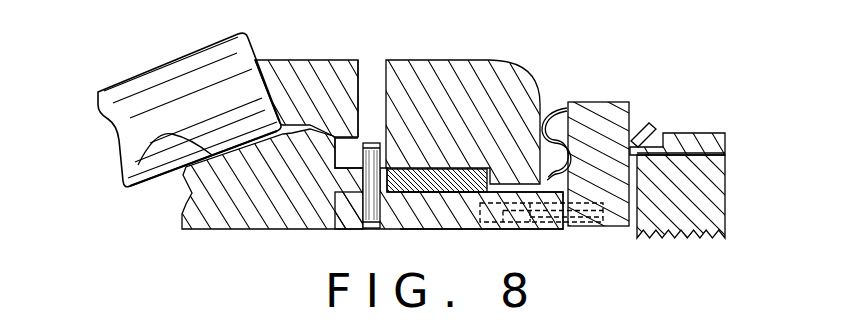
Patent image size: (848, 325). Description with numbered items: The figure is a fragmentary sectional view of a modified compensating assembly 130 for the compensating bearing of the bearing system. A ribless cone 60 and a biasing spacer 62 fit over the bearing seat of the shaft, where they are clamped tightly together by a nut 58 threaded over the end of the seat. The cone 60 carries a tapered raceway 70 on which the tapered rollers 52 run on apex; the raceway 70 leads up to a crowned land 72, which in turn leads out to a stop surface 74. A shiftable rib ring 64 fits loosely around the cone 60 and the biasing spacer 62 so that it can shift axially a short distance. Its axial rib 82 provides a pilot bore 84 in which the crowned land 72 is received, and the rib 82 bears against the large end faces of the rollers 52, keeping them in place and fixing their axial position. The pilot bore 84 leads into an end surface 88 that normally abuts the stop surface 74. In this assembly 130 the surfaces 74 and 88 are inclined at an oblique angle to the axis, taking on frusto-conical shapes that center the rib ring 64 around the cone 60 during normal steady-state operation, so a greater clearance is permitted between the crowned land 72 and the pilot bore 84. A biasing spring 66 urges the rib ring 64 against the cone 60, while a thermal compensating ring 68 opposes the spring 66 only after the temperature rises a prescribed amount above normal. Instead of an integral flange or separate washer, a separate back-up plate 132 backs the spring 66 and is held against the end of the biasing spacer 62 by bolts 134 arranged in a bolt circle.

The tapered rollers 52 is at (108, 117).
The nut 58 is at (723, 187).
The ribless cone 60 is at (229, 218).
The biasing spacer 62 is at (463, 223).
The shiftable rib ring 64 is at (440, 84).
The biasing spring 66 is at (548, 110).
The thermal compensating ring 68 is at (437, 194).
The tapered raceway 70 is at (130, 178).
The crowned land 72 is at (332, 126).
The stop surface 74 is at (347, 136).
The axial rib 82 is at (280, 70).
The pilot bore 84 is at (210, 155).
The end surface 88 is at (330, 136).
The compensating assembly 130 is at (591, 66).
The back-up plate 132 is at (612, 113).
The bolts 134 is at (580, 224).